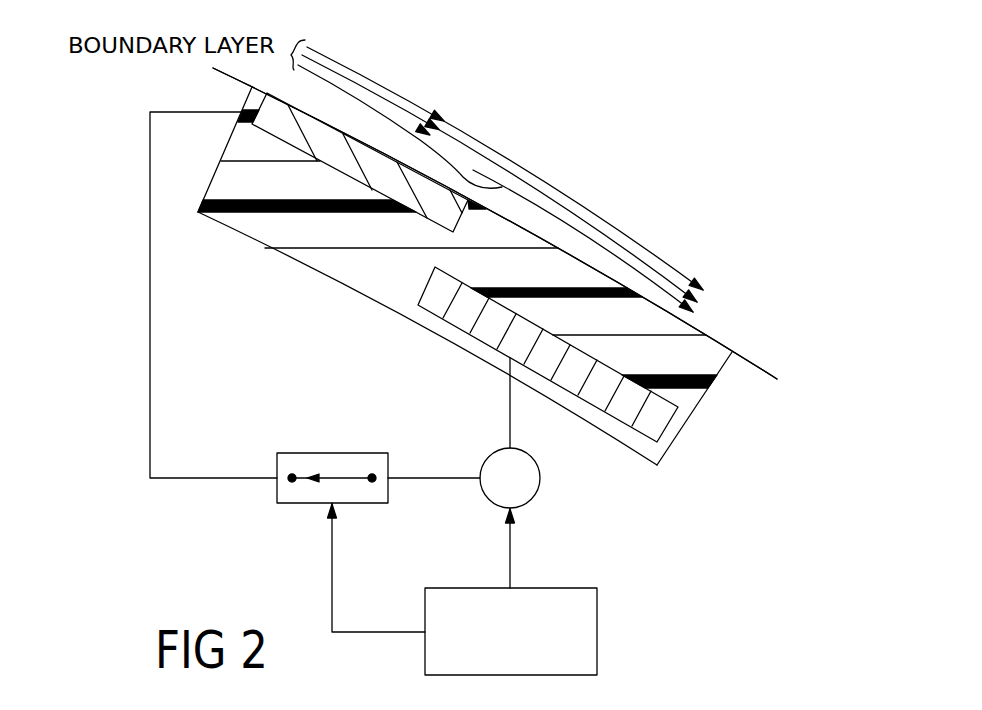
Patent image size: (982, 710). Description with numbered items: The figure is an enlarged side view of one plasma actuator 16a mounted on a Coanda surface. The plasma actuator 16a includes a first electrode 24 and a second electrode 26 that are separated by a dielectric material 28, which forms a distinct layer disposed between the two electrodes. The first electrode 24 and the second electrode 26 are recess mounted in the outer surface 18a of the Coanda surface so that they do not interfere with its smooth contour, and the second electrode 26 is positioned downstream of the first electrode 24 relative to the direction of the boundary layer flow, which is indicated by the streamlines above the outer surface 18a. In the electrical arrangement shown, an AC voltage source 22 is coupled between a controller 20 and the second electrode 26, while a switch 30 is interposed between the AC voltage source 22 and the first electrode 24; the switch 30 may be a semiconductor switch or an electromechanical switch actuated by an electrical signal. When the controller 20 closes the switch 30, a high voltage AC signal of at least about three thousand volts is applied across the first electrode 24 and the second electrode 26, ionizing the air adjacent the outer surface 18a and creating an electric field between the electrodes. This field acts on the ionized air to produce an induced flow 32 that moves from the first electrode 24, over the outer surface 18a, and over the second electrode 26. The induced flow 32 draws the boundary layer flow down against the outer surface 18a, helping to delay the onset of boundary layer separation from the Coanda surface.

The plasma actuator 16a is at (668, 483).
The outer surface 18a is at (753, 365).
The controller 20 is at (497, 659).
The AC voltage source 22 is at (540, 481).
The first electrode 24 is at (280, 125).
The second electrode 26 is at (657, 415).
The dielectric material 28 is at (348, 267).
The switch 30 is at (323, 453).
The induced flow 32 is at (448, 165).